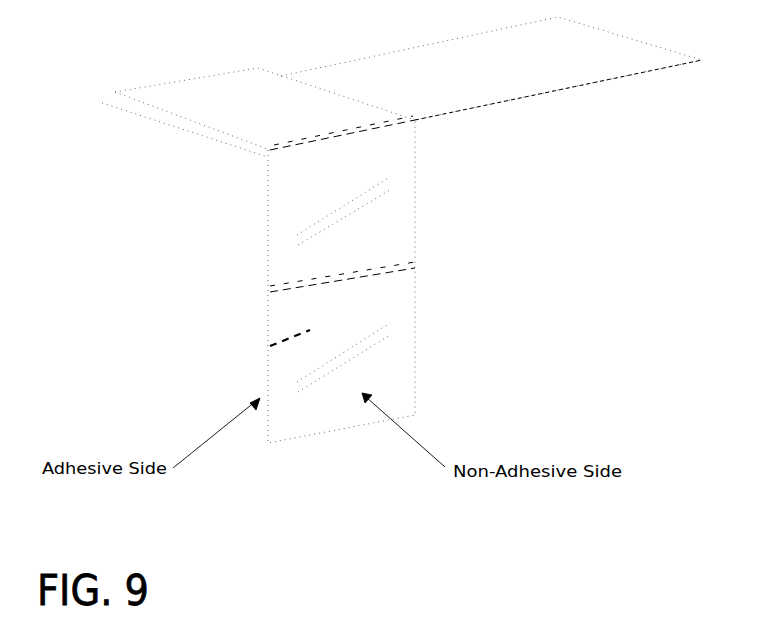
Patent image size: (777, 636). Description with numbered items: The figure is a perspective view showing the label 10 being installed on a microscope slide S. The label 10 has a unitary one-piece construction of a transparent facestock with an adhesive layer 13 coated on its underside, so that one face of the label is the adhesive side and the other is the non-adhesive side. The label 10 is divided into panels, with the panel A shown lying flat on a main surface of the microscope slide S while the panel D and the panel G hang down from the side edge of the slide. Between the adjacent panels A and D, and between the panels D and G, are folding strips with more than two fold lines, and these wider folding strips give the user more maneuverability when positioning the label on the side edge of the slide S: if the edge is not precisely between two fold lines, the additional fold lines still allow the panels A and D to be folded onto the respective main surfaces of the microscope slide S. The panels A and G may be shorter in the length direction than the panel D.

The label 10 is at (258, 255).
The adhesive layer 13 is at (246, 378).
The panel A is at (258, 112).
The panel D is at (343, 211).
The panel G is at (343, 357).
The microscope slide S is at (502, 60).